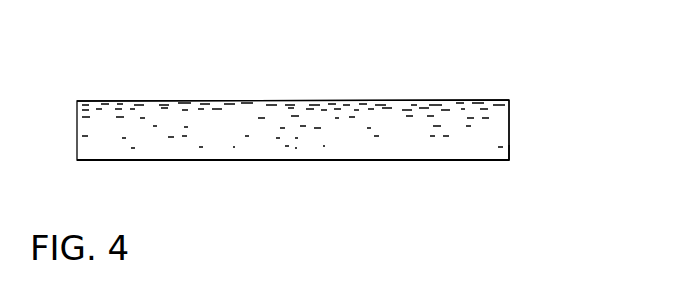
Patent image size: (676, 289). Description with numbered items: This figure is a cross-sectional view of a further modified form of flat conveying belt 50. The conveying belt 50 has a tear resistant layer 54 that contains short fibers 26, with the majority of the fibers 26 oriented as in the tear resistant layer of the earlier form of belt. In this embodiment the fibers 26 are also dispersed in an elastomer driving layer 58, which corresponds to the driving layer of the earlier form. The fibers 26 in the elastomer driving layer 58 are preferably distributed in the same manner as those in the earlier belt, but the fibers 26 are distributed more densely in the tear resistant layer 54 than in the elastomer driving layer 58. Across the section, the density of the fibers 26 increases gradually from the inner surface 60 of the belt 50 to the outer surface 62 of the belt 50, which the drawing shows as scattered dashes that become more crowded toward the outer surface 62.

The short fibers 26 is at (150, 102).
The conveying belt 50 is at (473, 72).
The tear resistant layer 54 is at (509, 110).
The elastomer driving layer 58 is at (490, 162).
The inner surface 60 is at (397, 162).
The outer surface 62 is at (355, 100).